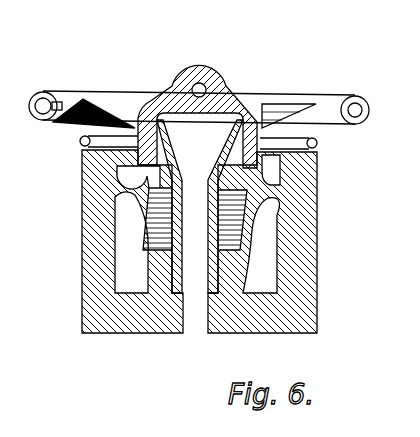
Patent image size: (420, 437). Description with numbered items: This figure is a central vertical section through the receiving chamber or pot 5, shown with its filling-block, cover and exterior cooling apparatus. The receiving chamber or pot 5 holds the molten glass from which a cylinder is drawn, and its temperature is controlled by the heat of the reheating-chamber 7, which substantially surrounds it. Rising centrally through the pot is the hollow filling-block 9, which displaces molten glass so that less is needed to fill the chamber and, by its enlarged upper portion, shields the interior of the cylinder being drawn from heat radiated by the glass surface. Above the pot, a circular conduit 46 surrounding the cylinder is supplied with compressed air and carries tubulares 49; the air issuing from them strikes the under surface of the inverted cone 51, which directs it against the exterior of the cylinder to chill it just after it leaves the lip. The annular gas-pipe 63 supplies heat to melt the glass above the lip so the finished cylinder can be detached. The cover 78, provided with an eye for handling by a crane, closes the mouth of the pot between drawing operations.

The receiving chamber or pot 5 is at (150, 240).
The reheating-chamber 7 is at (262, 242).
The hollow filling-block 9 is at (200, 206).
The circular conduit 46 is at (60, 102).
The tubulares 49 is at (50, 118).
The inverted cone 51 is at (206, 109).
The annular gas-pipe 63 is at (80, 144).
The cover 78 is at (225, 90).